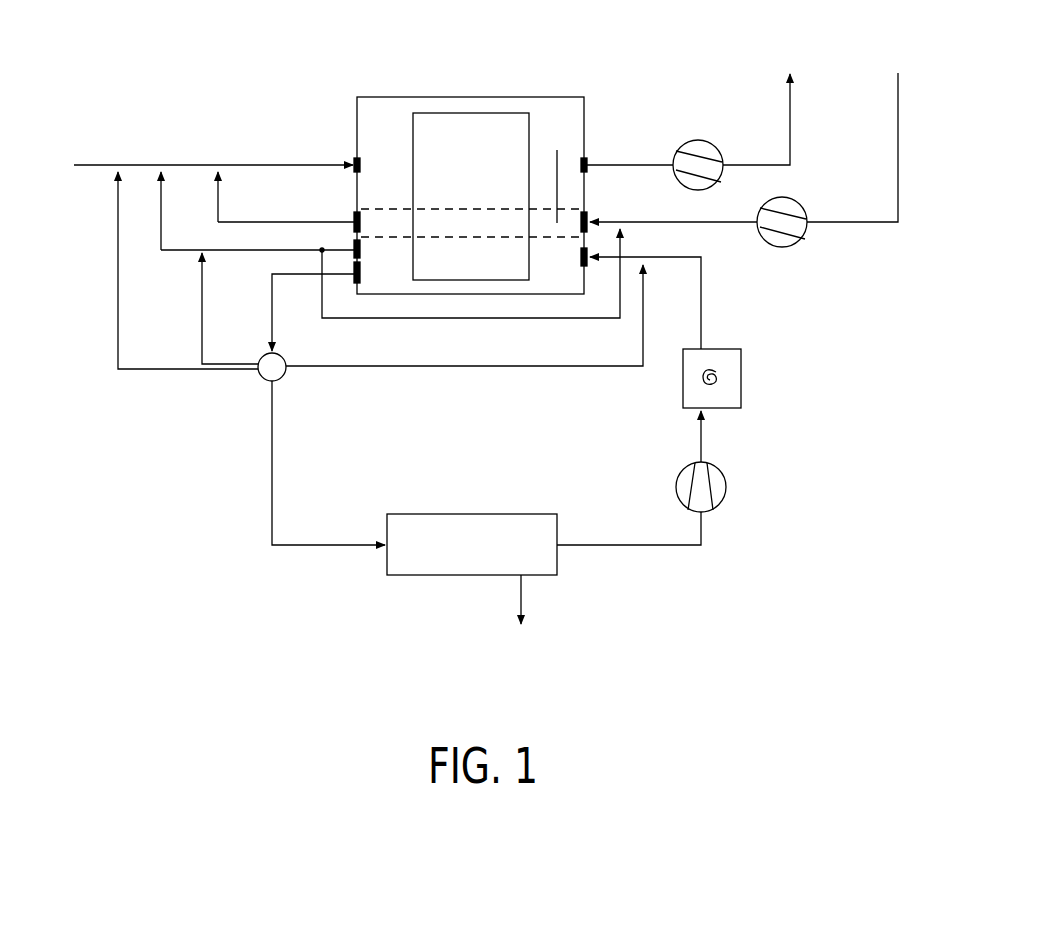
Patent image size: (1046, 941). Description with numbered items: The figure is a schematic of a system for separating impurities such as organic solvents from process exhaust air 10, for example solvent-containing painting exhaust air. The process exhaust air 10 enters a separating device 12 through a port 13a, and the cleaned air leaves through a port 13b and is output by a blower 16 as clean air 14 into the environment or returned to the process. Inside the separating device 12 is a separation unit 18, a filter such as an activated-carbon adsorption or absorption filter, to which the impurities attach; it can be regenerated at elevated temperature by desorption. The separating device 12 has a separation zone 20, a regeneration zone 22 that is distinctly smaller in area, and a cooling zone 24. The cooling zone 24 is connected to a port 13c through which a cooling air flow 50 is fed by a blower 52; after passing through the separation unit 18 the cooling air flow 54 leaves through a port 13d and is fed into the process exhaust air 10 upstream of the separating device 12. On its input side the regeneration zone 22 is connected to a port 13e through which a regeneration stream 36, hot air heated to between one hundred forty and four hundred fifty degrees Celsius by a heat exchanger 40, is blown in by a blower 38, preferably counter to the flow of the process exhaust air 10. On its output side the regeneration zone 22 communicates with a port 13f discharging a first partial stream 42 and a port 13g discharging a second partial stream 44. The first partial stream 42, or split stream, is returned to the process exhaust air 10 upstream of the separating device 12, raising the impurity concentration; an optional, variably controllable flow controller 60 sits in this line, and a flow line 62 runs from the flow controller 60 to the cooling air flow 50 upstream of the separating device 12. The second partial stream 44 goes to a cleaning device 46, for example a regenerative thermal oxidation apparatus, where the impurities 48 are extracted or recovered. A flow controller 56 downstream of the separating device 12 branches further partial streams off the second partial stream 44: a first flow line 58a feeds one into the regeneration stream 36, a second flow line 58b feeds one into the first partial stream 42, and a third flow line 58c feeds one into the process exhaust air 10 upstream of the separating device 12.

The process exhaust air 10 is at (108, 165).
The separating device 12 is at (389, 97).
The port 13a is at (354, 160).
The port 13b is at (587, 160).
The port 13c is at (587, 218).
The port 13d is at (354, 216).
The port 13e is at (583, 266).
The port 13f is at (355, 258).
The port 13g is at (358, 283).
The clean air 14 is at (790, 105).
The blower 16 is at (698, 140).
The separation unit 18 is at (433, 113).
The separation zone 20 is at (548, 110).
The regeneration zone 22 is at (385, 270).
The cooling zone 24 is at (558, 223).
The regeneration stream 36 is at (701, 294).
The blower 38 is at (726, 487).
The heat exchanger 40 is at (741, 378).
The first partial stream 42 is at (161, 228).
The second partial stream 44 is at (272, 312).
The cleaning device 46 is at (502, 514).
The impurities 48 is at (521, 595).
The cooling air flow 50 is at (898, 228).
The blower 52 is at (800, 204).
The cooling air flow 54 is at (247, 222).
The flow controller 56 is at (262, 378).
The first flow line 58a is at (360, 366).
The second flow line 58b is at (202, 330).
The third flow line 58c is at (140, 369).
The flow controller 60 is at (322, 250).
The flow line 62 is at (515, 318).